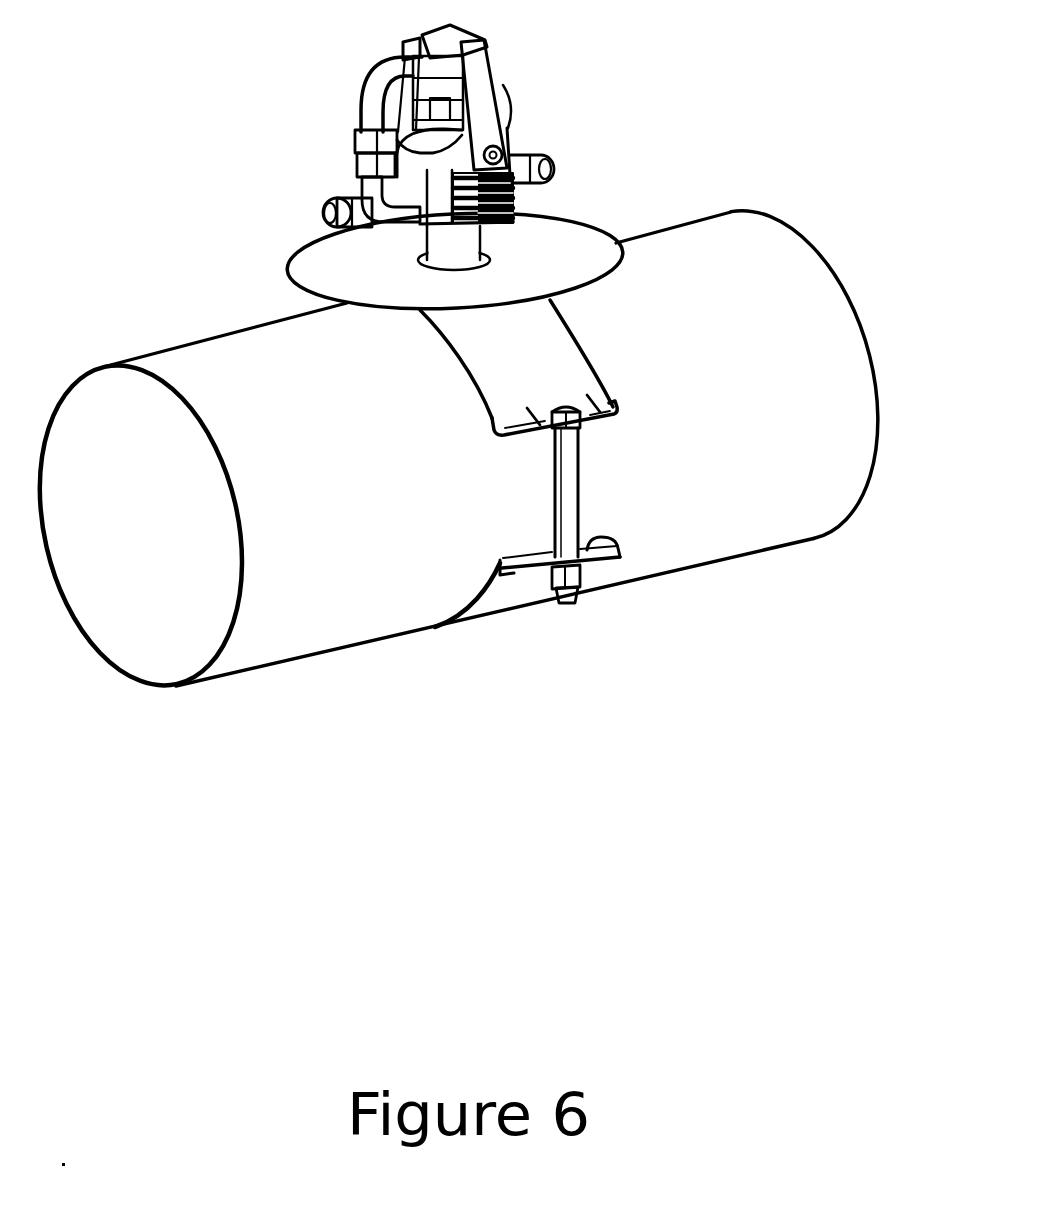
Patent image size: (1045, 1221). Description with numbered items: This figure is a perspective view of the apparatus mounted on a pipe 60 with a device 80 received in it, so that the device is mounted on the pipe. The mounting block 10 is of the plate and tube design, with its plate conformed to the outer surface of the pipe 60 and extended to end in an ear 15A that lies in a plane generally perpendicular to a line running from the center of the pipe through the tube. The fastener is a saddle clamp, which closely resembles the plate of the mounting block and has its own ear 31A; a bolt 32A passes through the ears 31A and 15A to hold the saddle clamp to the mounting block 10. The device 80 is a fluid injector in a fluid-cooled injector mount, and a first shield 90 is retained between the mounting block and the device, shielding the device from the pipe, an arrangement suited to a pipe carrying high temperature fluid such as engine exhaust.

The mounting block 10 is at (569, 359).
The ear 15A is at (517, 430).
The ear 31A is at (513, 567).
The bolt 32A is at (570, 490).
The pipe 60 is at (216, 334).
The device 80 is at (455, 166).
The first shield 90 is at (543, 244).